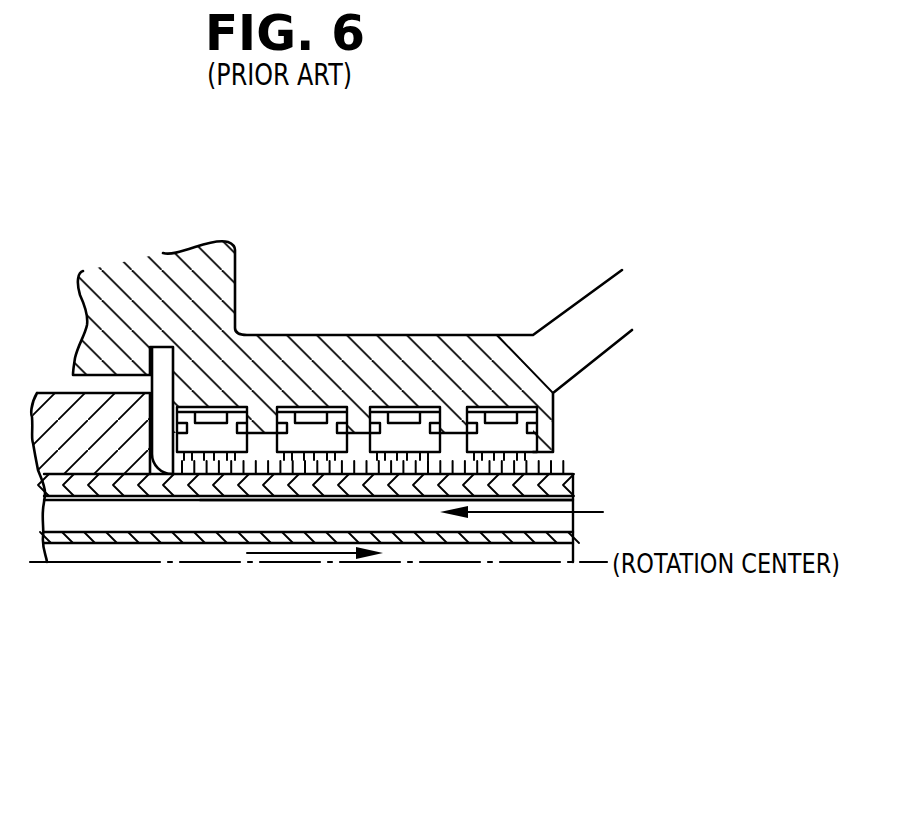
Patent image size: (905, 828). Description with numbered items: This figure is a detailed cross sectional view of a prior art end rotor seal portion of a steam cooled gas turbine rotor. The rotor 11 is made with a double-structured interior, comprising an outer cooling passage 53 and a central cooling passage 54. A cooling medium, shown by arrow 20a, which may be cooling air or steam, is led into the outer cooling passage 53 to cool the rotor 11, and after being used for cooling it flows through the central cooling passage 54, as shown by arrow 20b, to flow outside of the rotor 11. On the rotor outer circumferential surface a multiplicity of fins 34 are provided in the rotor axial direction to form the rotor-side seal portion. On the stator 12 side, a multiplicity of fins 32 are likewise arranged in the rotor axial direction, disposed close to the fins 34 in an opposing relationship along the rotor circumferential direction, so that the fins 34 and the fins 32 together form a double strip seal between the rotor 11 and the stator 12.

The rotor 11 is at (112, 518).
The stator 12 is at (415, 360).
The fins (stator side) 32 is at (303, 443).
The fins (rotor side) 34 is at (563, 472).
The cooling medium flow (arrow) 20a is at (502, 518).
The cooling medium flow (arrow) 20b is at (312, 556).
The outer cooling passage 53 is at (413, 513).
The central cooling passage 54 is at (387, 553).